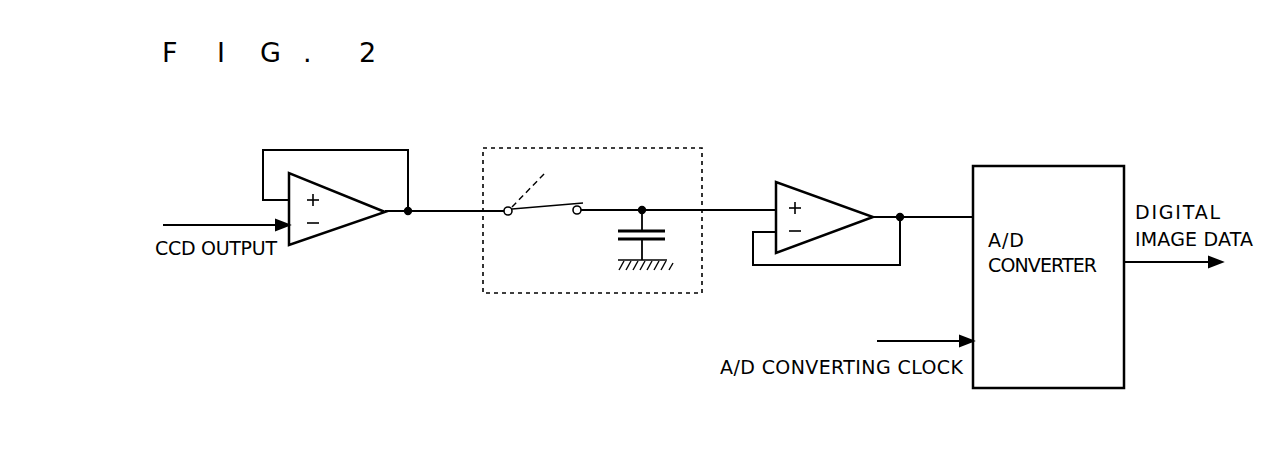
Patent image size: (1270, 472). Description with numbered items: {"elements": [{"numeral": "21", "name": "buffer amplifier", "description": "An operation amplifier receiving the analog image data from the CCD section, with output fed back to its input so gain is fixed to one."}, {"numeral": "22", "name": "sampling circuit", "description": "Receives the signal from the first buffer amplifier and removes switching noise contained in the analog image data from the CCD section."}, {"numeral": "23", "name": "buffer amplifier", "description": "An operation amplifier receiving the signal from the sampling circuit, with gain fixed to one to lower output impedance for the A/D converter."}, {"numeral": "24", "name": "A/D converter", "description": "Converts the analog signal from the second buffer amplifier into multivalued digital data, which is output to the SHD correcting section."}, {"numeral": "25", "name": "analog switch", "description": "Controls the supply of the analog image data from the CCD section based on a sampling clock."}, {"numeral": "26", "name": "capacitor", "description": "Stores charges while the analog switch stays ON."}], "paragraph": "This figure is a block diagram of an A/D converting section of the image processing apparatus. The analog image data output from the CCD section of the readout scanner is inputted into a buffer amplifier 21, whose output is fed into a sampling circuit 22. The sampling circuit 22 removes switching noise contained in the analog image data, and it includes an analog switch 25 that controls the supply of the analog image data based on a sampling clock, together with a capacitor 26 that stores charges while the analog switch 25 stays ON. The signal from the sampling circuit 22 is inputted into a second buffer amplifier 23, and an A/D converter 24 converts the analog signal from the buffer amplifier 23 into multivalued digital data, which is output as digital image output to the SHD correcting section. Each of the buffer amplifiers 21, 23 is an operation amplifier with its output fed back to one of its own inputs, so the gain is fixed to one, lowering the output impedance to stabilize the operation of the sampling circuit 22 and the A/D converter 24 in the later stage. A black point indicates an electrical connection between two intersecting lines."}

The first buffer amplifier 21 is at (340, 227).
The sample and hold circuit 22 is at (628, 147).
The second buffer amplifier 23 is at (802, 190).
The A/D converter 24 is at (1022, 166).
The switch 25 is at (507, 219).
The capacitor 26 is at (628, 245).